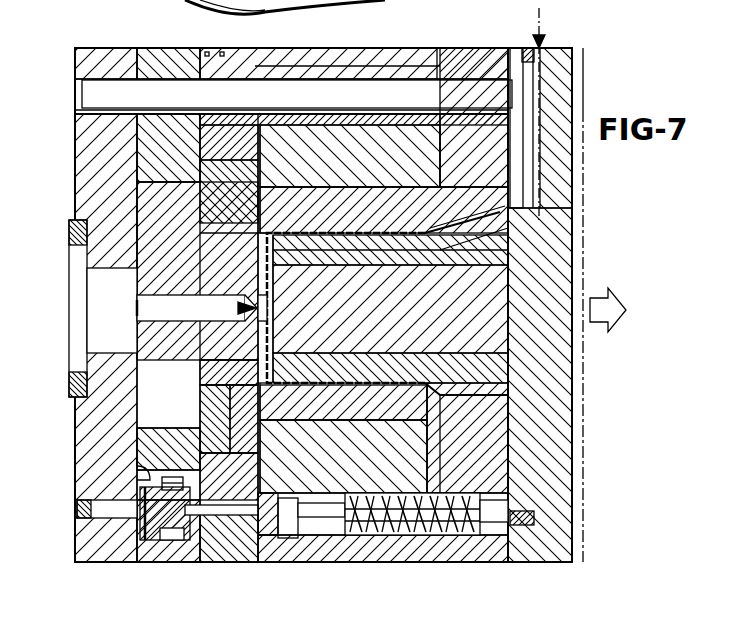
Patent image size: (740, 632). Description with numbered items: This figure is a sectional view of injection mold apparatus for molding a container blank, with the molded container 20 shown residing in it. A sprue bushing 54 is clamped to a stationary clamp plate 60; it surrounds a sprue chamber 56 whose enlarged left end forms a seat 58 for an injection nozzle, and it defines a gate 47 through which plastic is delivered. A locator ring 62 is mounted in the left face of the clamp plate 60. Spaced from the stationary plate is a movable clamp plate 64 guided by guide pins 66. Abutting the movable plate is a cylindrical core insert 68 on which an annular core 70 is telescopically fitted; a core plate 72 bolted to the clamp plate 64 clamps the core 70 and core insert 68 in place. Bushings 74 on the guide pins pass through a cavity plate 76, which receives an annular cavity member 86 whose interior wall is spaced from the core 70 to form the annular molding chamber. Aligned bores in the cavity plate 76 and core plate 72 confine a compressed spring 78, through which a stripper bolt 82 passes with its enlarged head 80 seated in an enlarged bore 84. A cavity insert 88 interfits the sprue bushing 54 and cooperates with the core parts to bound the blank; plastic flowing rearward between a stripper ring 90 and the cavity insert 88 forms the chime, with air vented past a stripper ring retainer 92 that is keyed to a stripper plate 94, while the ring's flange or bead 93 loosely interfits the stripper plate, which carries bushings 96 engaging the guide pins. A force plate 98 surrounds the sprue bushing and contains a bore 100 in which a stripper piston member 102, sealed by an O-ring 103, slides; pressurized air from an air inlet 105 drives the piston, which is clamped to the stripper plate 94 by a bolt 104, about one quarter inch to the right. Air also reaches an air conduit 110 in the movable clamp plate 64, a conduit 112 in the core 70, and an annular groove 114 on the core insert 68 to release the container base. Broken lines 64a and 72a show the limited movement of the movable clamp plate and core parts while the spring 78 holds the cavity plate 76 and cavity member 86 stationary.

The container 20 is at (335, 395).
The gate 47 is at (250, 305).
The sprue bushing 54 is at (160, 378).
The sprue chamber 56 is at (170, 305).
The seat 58 is at (137, 313).
The stationary clamp plate 60 is at (78, 150).
The locator ring 62 is at (68, 215).
The movable clamp plate 64 is at (558, 445).
The broken lines 64a is at (586, 65).
The guide pins 66 is at (474, 92).
The core insert 68 is at (500, 278).
The core 70 is at (505, 395).
The core plate 72 is at (505, 545).
The broken lines 72a is at (437, 62).
The bushings 74 is at (300, 70).
The cavity plate 76 is at (375, 555).
The compressed spring 78 is at (480, 540).
The enlarged head 80 is at (310, 535).
The stripper bolt 82 is at (425, 540).
The enlarged bore 84 is at (285, 535).
The cavity member 86 is at (345, 205).
The cavity insert 88 is at (232, 350).
The stripper ring 90 is at (200, 400).
The stripper ring retainer 92 is at (208, 160).
The flange or bead 93 is at (245, 160).
The stripper plate 94 is at (223, 48).
The bushings 96 is at (200, 50).
The force plate 98 is at (195, 545).
The bore 100 is at (162, 545).
The stripper piston member 102 is at (165, 483).
The O-ring 103 is at (137, 470).
The bolt 104 is at (255, 545).
The air inlet 105 is at (90, 512).
The air conduit 110 is at (530, 160).
The conduit 112 is at (512, 230).
The annular groove 114 is at (280, 265).